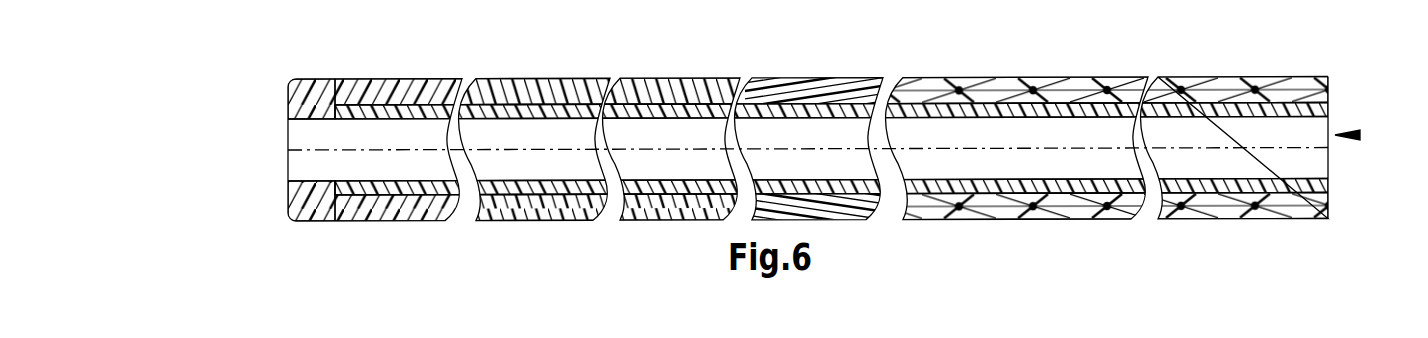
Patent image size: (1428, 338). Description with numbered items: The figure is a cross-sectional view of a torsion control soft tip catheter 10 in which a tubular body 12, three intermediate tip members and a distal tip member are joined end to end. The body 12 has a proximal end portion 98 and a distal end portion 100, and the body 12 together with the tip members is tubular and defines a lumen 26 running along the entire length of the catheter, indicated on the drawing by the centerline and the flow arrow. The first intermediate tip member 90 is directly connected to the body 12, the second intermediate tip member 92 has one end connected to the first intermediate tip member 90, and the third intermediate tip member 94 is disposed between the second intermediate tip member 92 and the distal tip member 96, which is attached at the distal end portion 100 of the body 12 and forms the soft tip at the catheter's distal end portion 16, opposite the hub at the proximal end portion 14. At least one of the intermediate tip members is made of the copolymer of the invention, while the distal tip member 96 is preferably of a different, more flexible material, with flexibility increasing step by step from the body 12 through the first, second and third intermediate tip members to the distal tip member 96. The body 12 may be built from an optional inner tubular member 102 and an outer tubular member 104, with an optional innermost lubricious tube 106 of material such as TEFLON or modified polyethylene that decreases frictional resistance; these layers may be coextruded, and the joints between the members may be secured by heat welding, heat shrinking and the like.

The torsion control soft tip catheter 10 is at (963, 55).
The tubular body 12 is at (1078, 82).
The proximal end portion 14 is at (1278, 79).
The distal end portion 16 is at (347, 79).
The lumen 26 is at (1360, 135).
The first intermediate tip member 90 is at (802, 79).
The second intermediate tip member 92 is at (701, 79).
The third intermediate tip member 94 is at (585, 79).
The distal tip member 96 is at (417, 79).
The proximal end portion 98 is at (1320, 79).
The distal end portion 100 is at (968, 79).
The inner tubular member 102 is at (1222, 100).
The outer tubular member 104 is at (1205, 85).
The innermost lubricious tube 106 is at (1018, 111).